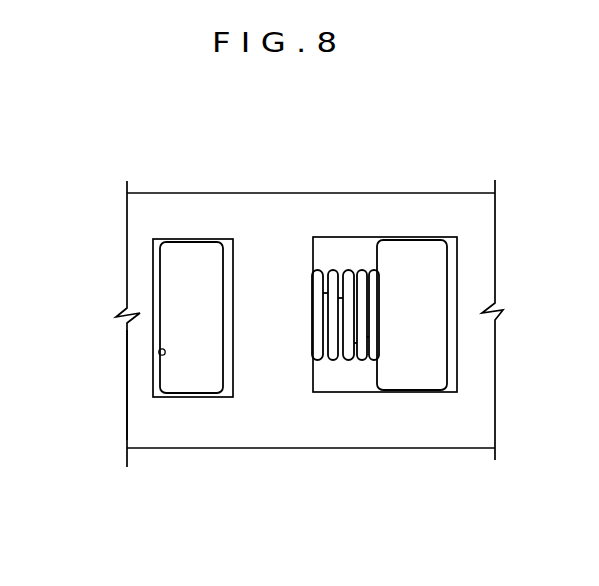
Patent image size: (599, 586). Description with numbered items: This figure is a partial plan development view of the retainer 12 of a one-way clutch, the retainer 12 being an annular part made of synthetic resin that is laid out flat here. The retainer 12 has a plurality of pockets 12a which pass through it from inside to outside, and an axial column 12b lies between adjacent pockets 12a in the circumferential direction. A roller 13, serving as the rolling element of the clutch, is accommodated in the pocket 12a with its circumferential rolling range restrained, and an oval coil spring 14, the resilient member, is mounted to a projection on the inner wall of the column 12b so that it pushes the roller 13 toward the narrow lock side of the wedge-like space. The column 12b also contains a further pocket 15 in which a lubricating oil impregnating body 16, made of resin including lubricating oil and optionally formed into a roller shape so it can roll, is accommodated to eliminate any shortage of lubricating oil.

The retainer 12 is at (275, 191).
The pocket 12a is at (315, 375).
The axial column 12b is at (138, 393).
The roller 13 is at (410, 253).
The oval coil spring 14 is at (348, 357).
The pocket 15 is at (159, 351).
The lubricating oil impregnating body 16 is at (192, 257).